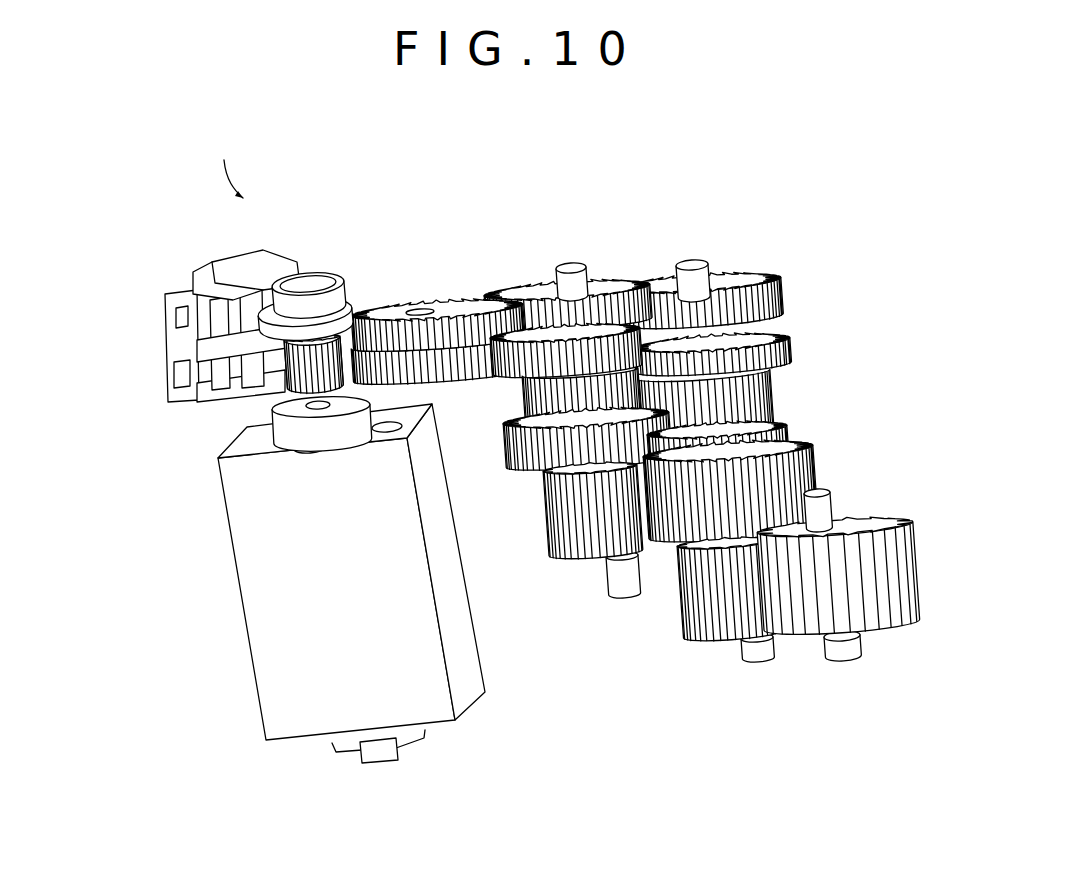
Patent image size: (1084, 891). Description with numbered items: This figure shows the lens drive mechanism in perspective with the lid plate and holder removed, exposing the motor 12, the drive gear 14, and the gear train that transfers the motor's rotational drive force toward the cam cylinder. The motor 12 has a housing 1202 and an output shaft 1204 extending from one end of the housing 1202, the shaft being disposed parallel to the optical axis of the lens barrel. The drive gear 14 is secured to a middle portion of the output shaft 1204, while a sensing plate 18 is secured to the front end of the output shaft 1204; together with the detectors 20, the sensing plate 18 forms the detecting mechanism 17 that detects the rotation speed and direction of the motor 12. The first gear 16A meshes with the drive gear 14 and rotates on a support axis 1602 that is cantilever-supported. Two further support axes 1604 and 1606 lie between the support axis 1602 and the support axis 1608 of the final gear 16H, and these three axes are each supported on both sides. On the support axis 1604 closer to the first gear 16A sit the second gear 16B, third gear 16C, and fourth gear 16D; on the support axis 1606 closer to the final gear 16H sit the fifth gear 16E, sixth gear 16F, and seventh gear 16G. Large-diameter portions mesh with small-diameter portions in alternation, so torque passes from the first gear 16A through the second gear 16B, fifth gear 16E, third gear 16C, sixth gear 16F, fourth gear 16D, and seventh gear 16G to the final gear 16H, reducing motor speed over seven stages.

The motor 12 is at (316, 578).
The housing 1202 is at (258, 688).
The output shaft 1204 is at (316, 410).
The drive gear 14 is at (240, 401).
The first gear 16A is at (478, 308).
The second gear 16B is at (620, 278).
The third gear 16C is at (500, 364).
The fourth gear 16D is at (545, 462).
The fifth gear 16E is at (731, 288).
The sixth gear 16F is at (765, 338).
The seventh gear 16G is at (784, 426).
The final gear 16H is at (901, 553).
The support axis 1602 is at (410, 309).
The support axis 1604 is at (560, 272).
The support axis 1606 is at (684, 263).
The support axis 1608 is at (815, 490).
The detecting mechanism 17 is at (225, 167).
The sensing plate 18 is at (367, 300).
The detectors 20 is at (227, 265).